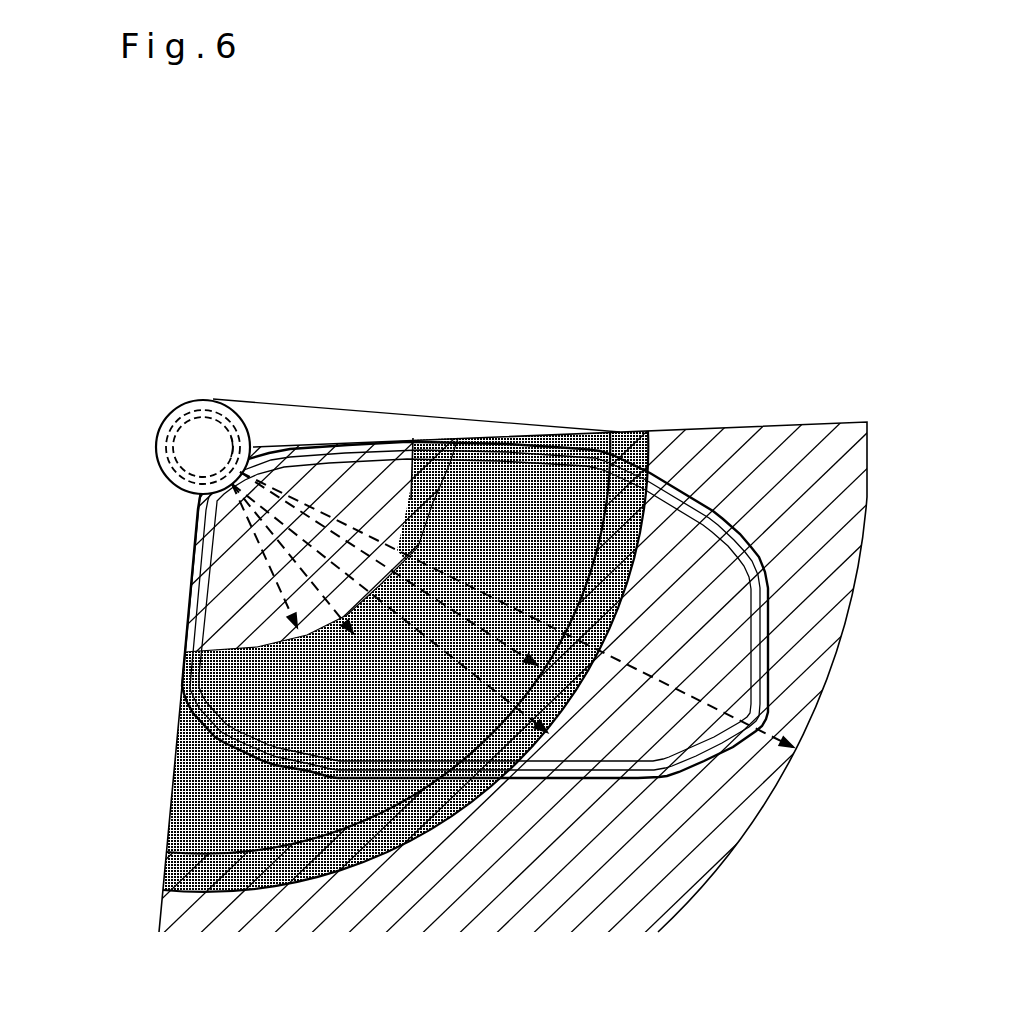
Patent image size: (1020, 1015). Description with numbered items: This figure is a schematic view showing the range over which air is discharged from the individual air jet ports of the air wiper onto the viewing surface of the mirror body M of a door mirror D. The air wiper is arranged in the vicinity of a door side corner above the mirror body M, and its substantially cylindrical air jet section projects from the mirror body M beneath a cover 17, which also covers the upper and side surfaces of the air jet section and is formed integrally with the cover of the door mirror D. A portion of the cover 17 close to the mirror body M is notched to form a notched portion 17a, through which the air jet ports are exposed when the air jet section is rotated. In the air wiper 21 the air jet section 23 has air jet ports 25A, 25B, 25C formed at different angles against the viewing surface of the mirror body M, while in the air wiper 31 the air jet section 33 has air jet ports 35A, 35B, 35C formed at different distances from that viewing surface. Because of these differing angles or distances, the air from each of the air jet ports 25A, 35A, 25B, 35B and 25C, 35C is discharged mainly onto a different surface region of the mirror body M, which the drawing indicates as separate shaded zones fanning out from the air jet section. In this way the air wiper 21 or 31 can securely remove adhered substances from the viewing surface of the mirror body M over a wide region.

The cover 17 is at (157, 439).
The notched portion 17a is at (243, 447).
The air wiper 21 is at (181, 367).
The air wiper 31 is at (183, 399).
The air jet section 23 is at (227, 369).
The air jet section 33 is at (201, 412).
The air jet port 25A is at (560, 630).
The air jet port 35A is at (856, 392).
The air jet port 25B is at (415, 507).
The air jet port 35B is at (645, 432).
The air jet port 25C is at (339, 681).
The air jet port 35C is at (170, 505).
The door mirror D is at (363, 395).
The mirror body M is at (637, 750).